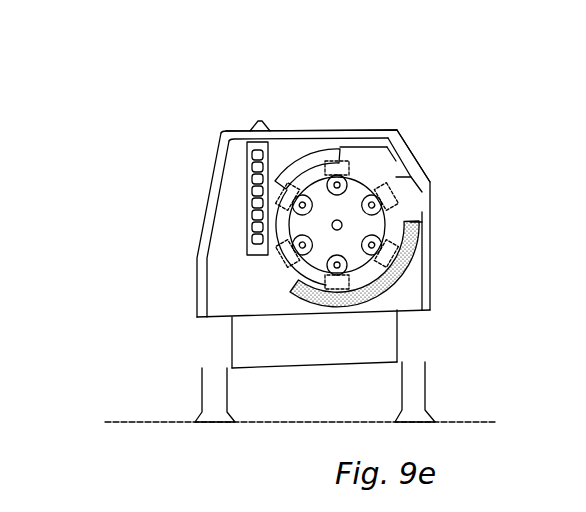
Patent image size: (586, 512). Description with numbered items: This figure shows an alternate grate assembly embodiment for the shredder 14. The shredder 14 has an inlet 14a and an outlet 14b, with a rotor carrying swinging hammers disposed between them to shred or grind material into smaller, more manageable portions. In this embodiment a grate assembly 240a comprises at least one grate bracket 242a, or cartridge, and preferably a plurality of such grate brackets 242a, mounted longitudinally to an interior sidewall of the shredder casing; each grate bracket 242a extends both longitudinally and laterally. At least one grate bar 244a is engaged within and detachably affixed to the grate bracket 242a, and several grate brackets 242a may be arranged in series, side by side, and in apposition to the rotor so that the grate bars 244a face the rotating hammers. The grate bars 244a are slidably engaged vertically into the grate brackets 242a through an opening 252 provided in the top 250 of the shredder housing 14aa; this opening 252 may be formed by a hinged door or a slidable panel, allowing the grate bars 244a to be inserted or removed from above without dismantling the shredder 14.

The shredder 14 is at (155, 130).
The inlet 14a is at (431, 205).
The shredder housing 14aa is at (432, 258).
The outlet 14b is at (197, 257).
The grate assembly 240a is at (238, 226).
The grate bracket 242a is at (252, 247).
The grate bar 244a is at (250, 162).
The top 250 is at (383, 128).
The opening 252 is at (272, 126).